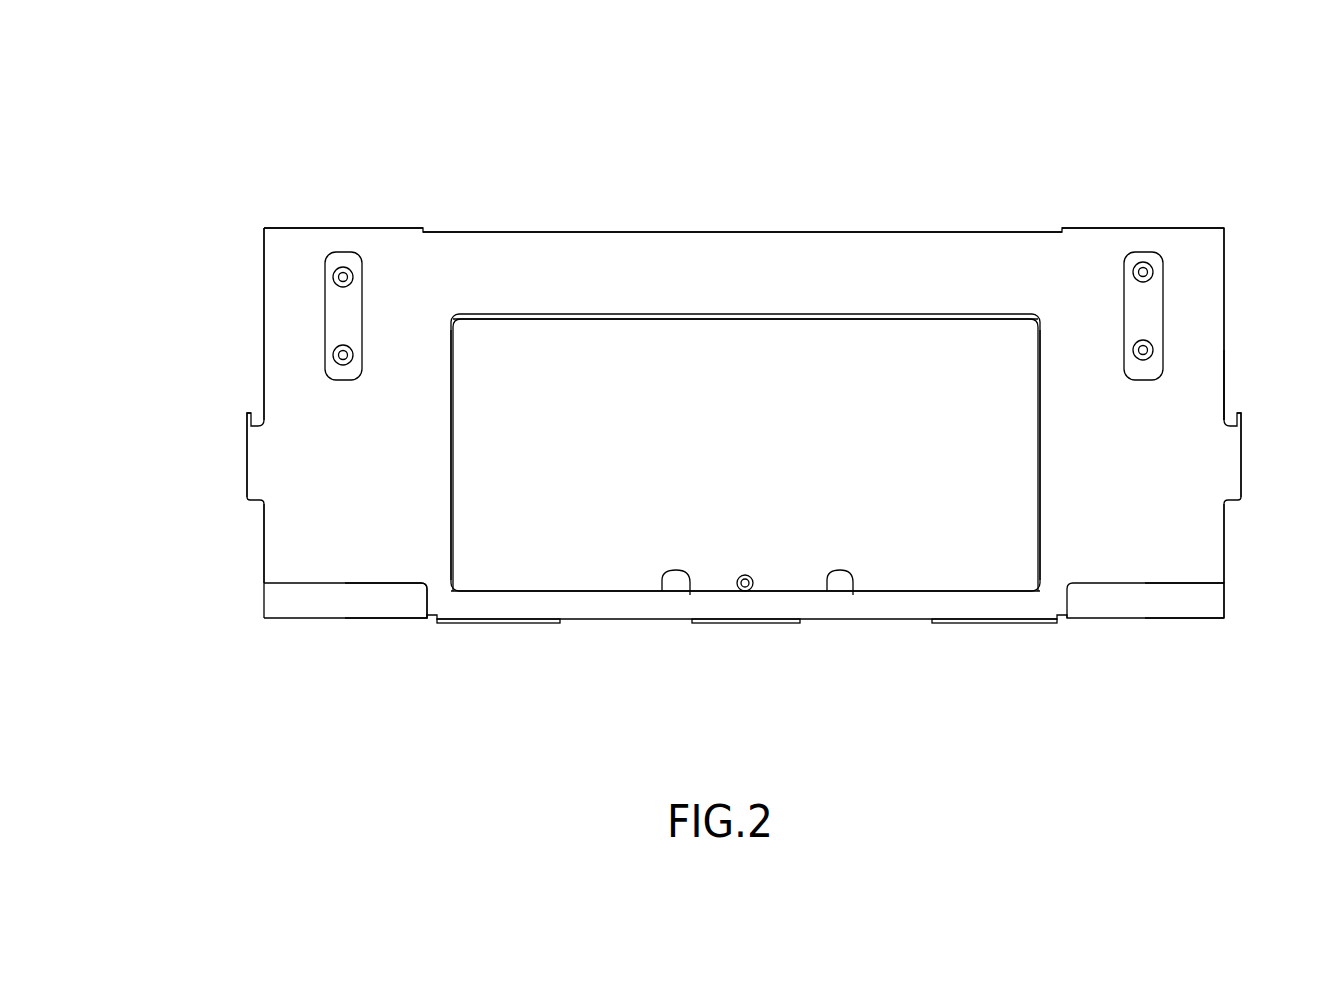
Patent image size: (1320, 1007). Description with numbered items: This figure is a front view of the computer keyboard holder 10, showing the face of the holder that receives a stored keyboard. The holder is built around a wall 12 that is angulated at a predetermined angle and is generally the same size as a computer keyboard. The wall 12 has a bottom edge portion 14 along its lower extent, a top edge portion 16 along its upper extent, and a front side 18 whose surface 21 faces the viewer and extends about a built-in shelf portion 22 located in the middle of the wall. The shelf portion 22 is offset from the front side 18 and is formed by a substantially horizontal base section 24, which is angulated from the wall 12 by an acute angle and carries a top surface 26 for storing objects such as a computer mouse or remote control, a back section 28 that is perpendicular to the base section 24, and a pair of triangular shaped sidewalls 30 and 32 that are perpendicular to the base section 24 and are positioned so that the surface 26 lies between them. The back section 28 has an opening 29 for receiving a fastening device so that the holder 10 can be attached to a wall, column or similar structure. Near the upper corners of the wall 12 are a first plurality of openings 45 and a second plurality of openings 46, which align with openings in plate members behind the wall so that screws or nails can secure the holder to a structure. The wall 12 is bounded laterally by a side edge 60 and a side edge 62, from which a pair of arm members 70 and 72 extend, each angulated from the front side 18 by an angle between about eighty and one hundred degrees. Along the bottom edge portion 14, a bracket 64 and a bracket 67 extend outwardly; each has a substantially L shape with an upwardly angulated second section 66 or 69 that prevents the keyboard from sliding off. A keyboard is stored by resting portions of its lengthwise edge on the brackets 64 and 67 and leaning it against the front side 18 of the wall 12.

The computer keyboard holder 10 is at (1034, 152).
The wall 12 is at (1218, 238).
The bottom edge portion 14 is at (886, 620).
The top edge portion 16 is at (560, 232).
The front side 18 is at (1210, 368).
The surface 21 is at (485, 278).
The built-in shelf portion 22 is at (652, 352).
The base section 24 is at (690, 595).
The top surface 26 is at (853, 595).
The back section 28 is at (832, 381).
The opening 29 is at (751, 576).
The triangular shaped sidewall 30 is at (452, 452).
The triangular shaped sidewall 32 is at (1040, 452).
The first plurality of openings 45 is at (333, 355).
The second plurality of openings 46 is at (1153, 272).
The side edge 60 is at (264, 380).
The side edge 62 is at (1224, 392).
The bracket 64 is at (310, 603).
The second section 66 is at (402, 603).
The bracket 67 is at (1105, 603).
The second section 69 is at (1198, 603).
The arm member 70 is at (248, 452).
The arm member 72 is at (1240, 452).